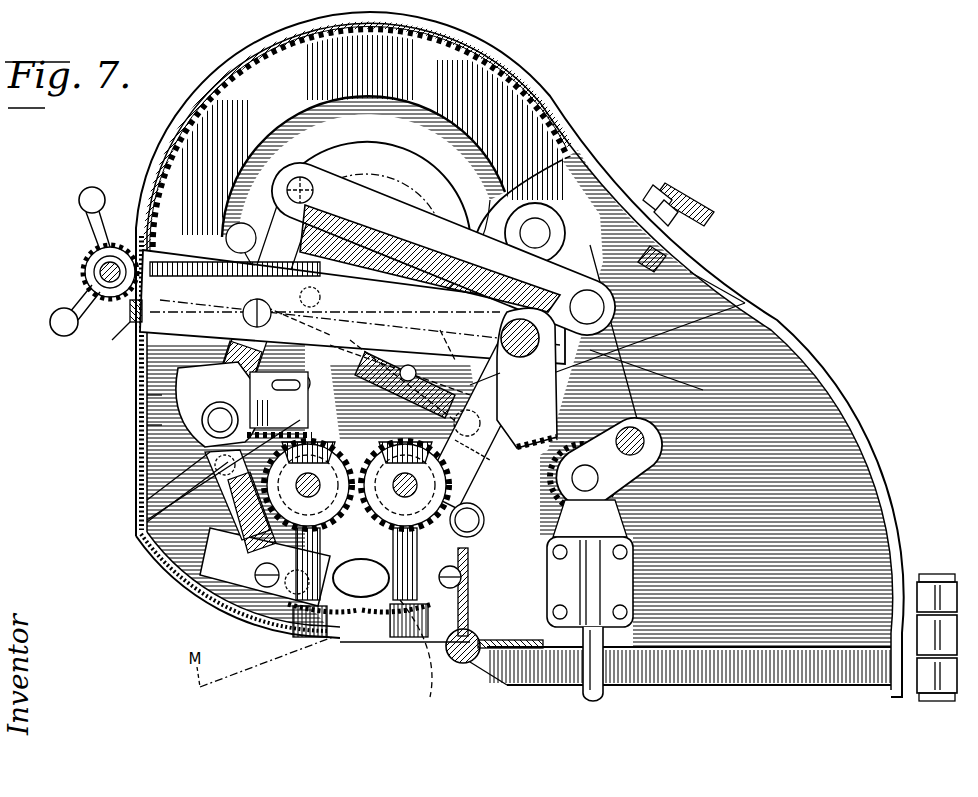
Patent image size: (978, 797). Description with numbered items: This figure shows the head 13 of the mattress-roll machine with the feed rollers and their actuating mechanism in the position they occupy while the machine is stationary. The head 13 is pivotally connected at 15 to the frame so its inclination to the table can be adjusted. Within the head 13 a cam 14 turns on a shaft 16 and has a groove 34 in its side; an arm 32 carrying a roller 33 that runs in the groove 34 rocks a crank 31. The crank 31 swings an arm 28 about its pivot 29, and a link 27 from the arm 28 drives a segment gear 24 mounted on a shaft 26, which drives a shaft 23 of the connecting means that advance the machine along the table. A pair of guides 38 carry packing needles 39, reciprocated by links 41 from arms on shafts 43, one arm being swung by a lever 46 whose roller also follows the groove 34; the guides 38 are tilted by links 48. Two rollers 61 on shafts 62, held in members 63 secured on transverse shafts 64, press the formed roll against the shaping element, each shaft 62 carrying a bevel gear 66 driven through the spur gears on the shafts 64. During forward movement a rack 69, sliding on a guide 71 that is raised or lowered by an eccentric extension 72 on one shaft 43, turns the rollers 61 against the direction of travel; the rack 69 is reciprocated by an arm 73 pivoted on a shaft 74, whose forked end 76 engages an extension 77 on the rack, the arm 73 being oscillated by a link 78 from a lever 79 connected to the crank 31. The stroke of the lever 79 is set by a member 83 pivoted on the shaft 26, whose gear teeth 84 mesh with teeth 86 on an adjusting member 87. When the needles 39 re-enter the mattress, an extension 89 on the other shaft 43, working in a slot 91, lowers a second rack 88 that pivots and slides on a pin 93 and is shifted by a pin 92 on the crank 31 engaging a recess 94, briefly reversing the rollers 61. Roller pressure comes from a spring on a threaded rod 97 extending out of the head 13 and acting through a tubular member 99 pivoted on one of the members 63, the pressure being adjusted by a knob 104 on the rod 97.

The head 13 is at (224, 62).
The cam 14 is at (462, 92).
The pivotal connection 15 is at (472, 661).
The shaft 16 is at (443, 249).
The shaft 23 is at (590, 692).
The segment gear 24 is at (590, 456).
The shaft 26 is at (690, 388).
The link 27 is at (446, 230).
The arm 28 is at (236, 282).
The pivot 29 is at (250, 313).
The crank 31 is at (135, 378).
The arm 32 is at (240, 226).
The roller 33 is at (244, 228).
The groove 34 is at (288, 132).
The guides 38 is at (240, 566).
The packing needles 39 is at (353, 616).
The links 41 is at (160, 558).
The shafts 43 is at (362, 345).
The lever 46 is at (265, 313).
The links 48 is at (288, 578).
The rollers 61 is at (393, 610).
The shafts 62 is at (356, 564).
The members 63 is at (256, 540).
The transverse shafts 64 is at (356, 485).
The bevel gear 66 is at (279, 424).
The rack 69 is at (566, 461).
The guide 71 is at (408, 364).
The extension 72 is at (447, 332).
The arm 73 is at (505, 376).
The shaft 74 is at (545, 226).
The forked end 76 is at (489, 408).
The extension 77 is at (482, 420).
The link 78 is at (386, 255).
The lever 79 is at (311, 190).
The member 83 is at (180, 276).
The gear teeth 84 is at (128, 314).
The teeth 86 is at (88, 268).
The adjusting member 87 is at (84, 303).
The rack 88 is at (128, 528).
The extension 89 is at (310, 376).
The slot 91 is at (279, 400).
The pin 92 is at (136, 430).
The pin 93 is at (217, 404).
The recess 94 is at (136, 406).
The threaded rod 97 is at (680, 270).
The tubular member 99 is at (748, 301).
The knob 104 is at (706, 220).